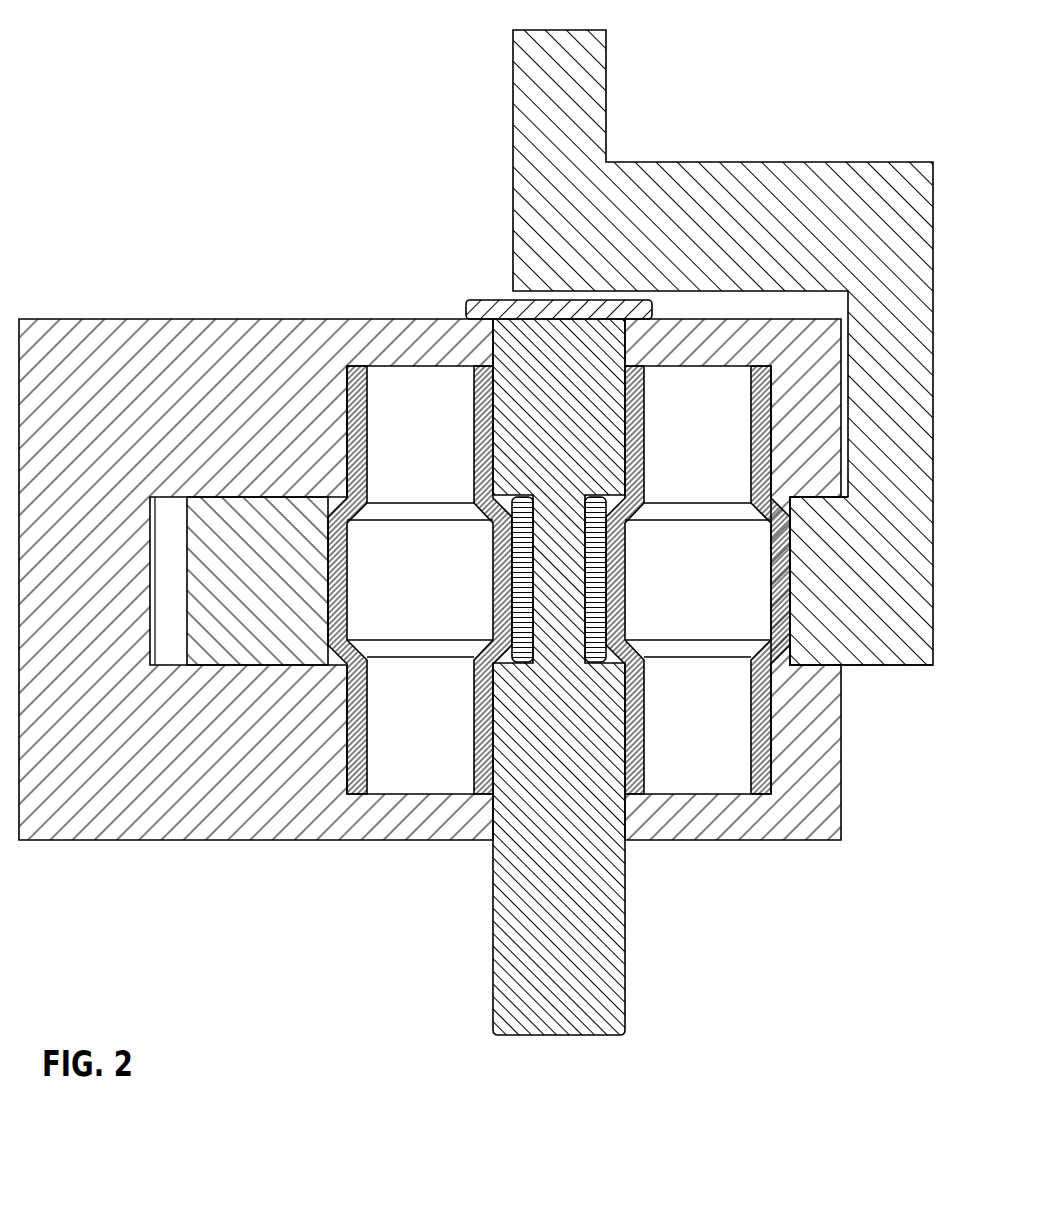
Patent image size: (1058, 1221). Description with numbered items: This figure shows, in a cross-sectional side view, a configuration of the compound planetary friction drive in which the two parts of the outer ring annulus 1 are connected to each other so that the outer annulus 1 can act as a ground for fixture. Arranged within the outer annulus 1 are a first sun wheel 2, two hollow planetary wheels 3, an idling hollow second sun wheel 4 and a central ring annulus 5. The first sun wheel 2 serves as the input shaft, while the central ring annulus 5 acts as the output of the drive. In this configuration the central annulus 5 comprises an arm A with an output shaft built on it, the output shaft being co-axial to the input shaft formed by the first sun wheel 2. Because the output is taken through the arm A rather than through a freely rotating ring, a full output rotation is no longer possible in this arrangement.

The outer ring annulus 1 is at (183, 395).
The first sun wheel 2 is at (593, 1000).
The hollow planetary wheels 3 is at (415, 615).
The idling hollow second sun wheel 4 is at (597, 553).
The central ring annulus 5 is at (295, 537).
The arm A is at (630, 217).